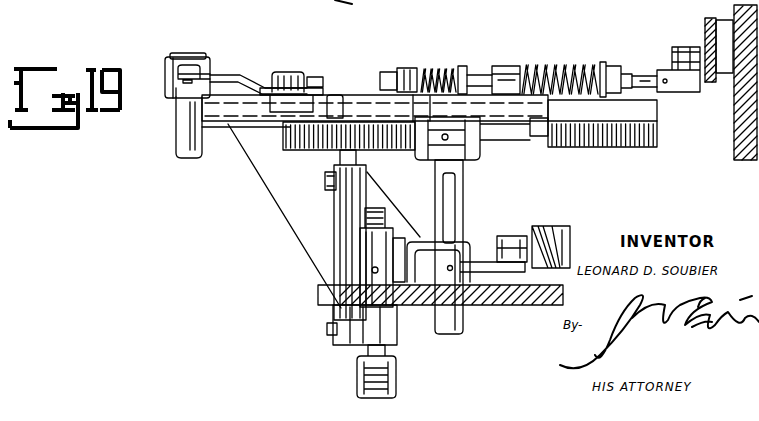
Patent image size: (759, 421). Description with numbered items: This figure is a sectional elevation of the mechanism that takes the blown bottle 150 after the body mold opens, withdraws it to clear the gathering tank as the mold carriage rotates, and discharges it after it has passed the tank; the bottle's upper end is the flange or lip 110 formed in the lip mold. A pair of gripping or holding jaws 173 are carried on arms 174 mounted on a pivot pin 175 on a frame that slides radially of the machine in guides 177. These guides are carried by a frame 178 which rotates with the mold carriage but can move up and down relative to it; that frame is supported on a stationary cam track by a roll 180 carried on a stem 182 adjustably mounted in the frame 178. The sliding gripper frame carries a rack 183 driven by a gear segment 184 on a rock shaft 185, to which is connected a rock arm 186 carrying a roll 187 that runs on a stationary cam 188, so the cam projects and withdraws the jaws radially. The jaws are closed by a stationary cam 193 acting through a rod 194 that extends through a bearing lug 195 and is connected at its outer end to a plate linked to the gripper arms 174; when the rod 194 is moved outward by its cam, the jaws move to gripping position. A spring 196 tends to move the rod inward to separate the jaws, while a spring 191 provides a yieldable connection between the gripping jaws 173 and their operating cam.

The flange or lip 110 is at (172, 56).
The bottle 150 is at (182, 150).
The gripping or holding jaws 173 is at (173, 97).
The arms 174 is at (228, 72).
The pivot pin 175 is at (292, 70).
The guides 177 is at (228, 120).
The frame 178 is at (297, 238).
The roll 180 is at (396, 372).
The stem 182 is at (370, 325).
The rack 183 is at (600, 135).
The gear segment 184 is at (485, 135).
The rock shaft 185 is at (466, 200).
The rock arm 186 is at (495, 276).
The roll 187 is at (515, 235).
The stationary cam 188 is at (540, 225).
The spring 191 is at (455, 44).
The stationary cam 193 is at (705, 26).
The rod 194 is at (586, 66).
The bearing lug 195 is at (502, 65).
The spring 196 is at (556, 70).